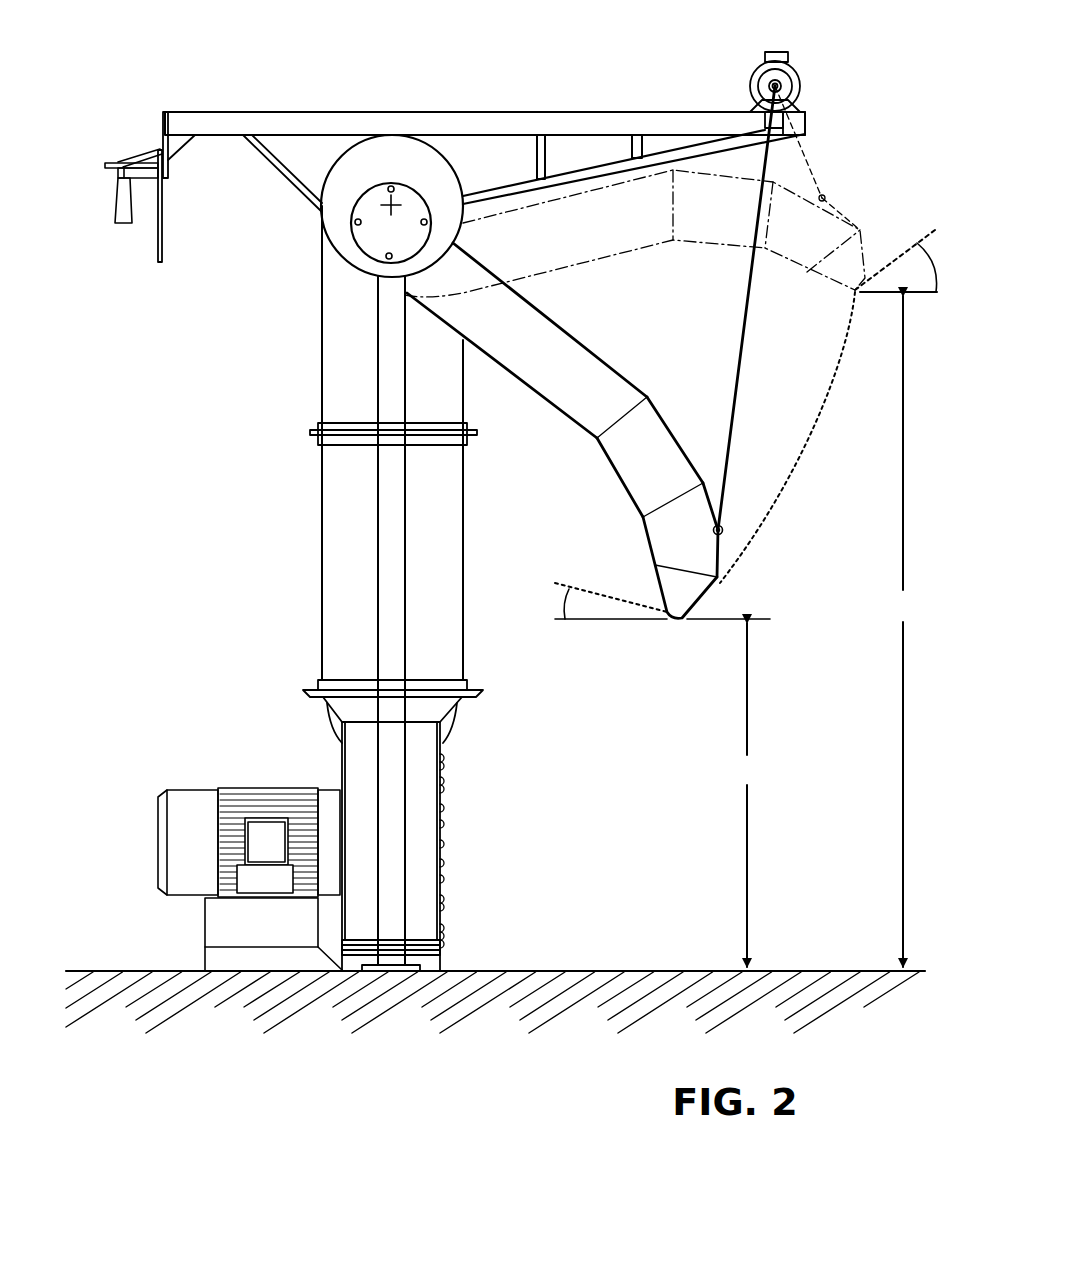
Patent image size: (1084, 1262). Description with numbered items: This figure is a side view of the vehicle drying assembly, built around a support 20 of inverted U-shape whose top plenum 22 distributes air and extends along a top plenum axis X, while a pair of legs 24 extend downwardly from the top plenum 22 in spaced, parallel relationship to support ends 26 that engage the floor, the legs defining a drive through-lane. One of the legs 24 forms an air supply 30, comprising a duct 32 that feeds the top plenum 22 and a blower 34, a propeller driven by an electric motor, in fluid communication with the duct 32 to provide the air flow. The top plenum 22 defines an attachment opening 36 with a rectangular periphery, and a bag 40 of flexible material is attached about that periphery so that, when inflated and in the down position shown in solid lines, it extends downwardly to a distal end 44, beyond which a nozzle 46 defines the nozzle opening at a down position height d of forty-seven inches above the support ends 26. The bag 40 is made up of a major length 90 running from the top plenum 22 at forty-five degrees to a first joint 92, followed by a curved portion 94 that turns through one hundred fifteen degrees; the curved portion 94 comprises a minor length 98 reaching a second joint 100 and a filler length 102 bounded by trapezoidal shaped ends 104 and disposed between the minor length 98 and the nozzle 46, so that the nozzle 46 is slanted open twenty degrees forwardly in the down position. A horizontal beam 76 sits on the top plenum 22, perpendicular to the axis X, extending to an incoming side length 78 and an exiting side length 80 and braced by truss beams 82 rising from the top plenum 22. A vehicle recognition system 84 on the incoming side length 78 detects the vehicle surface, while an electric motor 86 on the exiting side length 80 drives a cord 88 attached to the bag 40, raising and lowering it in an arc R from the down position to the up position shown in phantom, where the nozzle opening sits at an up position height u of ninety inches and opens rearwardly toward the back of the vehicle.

The support 20 is at (316, 403).
The top plenum 22 is at (393, 133).
The legs 24 is at (322, 482).
The support ends 26 is at (388, 972).
The air supply 30 is at (300, 690).
The duct 32 is at (328, 552).
The blower 34 is at (193, 798).
The attachment opening 36 is at (425, 268).
The bag 40 is at (590, 343).
The distal end 44 is at (670, 570).
The nozzle 46 is at (697, 603).
The horizontal beam 76 is at (357, 118).
The incoming side length 78 is at (165, 112).
The exiting side length 80 is at (806, 125).
The truss beams 82 is at (273, 163).
The vehicle recognition system 84 is at (123, 226).
The electric motor 86 is at (765, 51).
The cord 88 is at (745, 333).
The major length 90 is at (533, 377).
The first joint 92 is at (629, 410).
The curved portion 94 is at (666, 421).
The minor length 98 is at (612, 453).
The second joint 100 is at (688, 482).
The filler length 102 is at (653, 522).
The trapezoidal shaped ends 104 is at (725, 565).
The top plenum axis X is at (390, 207).
The arc R is at (815, 438).
The up position height u is at (903, 631).
The down position height d is at (747, 795).